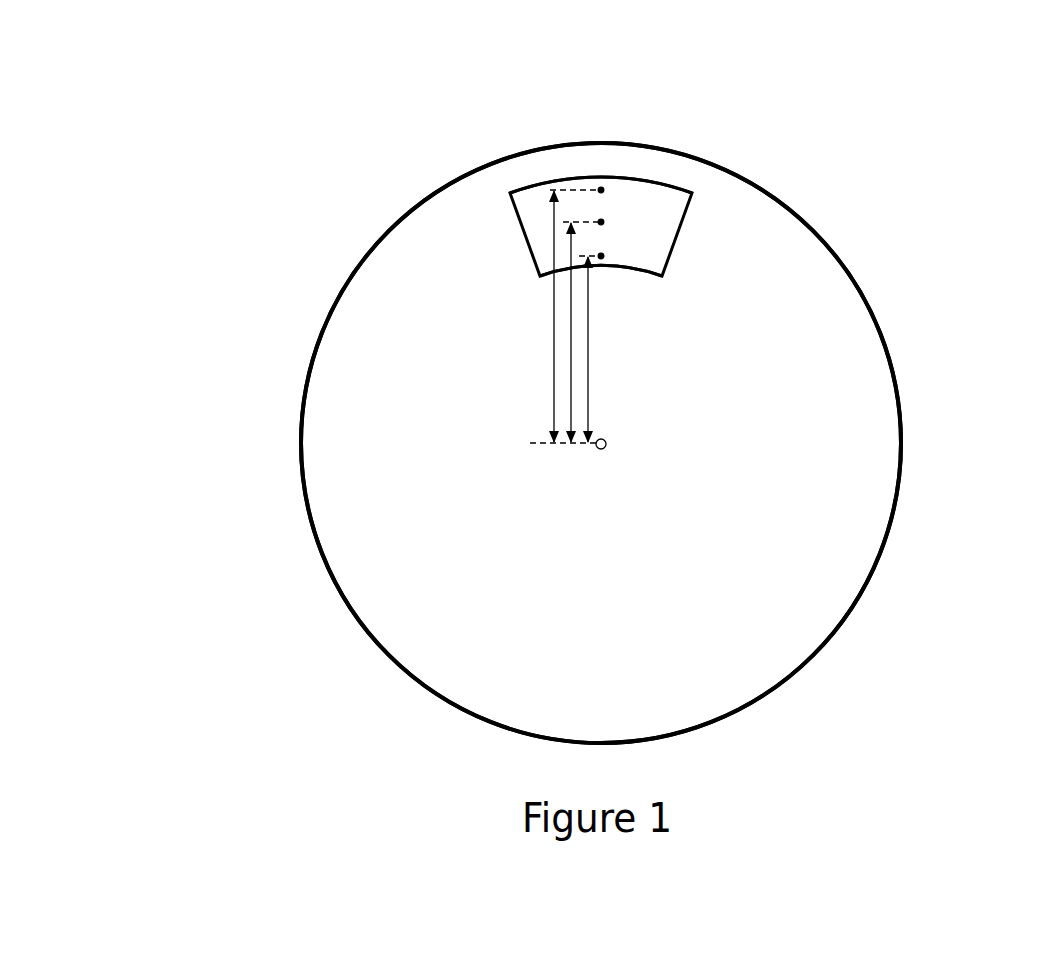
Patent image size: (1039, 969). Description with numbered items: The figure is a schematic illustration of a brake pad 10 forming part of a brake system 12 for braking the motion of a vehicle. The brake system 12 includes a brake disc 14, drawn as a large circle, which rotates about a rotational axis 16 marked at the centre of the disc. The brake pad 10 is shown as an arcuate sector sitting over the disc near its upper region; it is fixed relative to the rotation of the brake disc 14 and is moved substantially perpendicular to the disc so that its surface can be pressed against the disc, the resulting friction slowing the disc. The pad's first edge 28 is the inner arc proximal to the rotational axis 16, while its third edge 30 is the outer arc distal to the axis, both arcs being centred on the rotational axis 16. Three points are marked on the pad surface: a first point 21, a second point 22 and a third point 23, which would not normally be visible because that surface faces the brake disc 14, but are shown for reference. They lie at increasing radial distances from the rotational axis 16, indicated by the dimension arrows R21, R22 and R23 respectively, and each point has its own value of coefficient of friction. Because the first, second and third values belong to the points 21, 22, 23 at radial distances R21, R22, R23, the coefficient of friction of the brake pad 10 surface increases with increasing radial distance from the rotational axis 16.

The brake pad 10 is at (670, 203).
The brake system 12 is at (903, 230).
The brake disc 14 is at (843, 358).
The rotational axis 16 is at (605, 448).
The first point 21 is at (601, 254).
The second point 22 is at (601, 220).
The third point 23 is at (601, 188).
The first edge 28 is at (642, 276).
The third edge 30 is at (670, 184).
The radial distance R21 is at (588, 400).
The radial distance R22 is at (571, 363).
The radial distance R23 is at (554, 329).